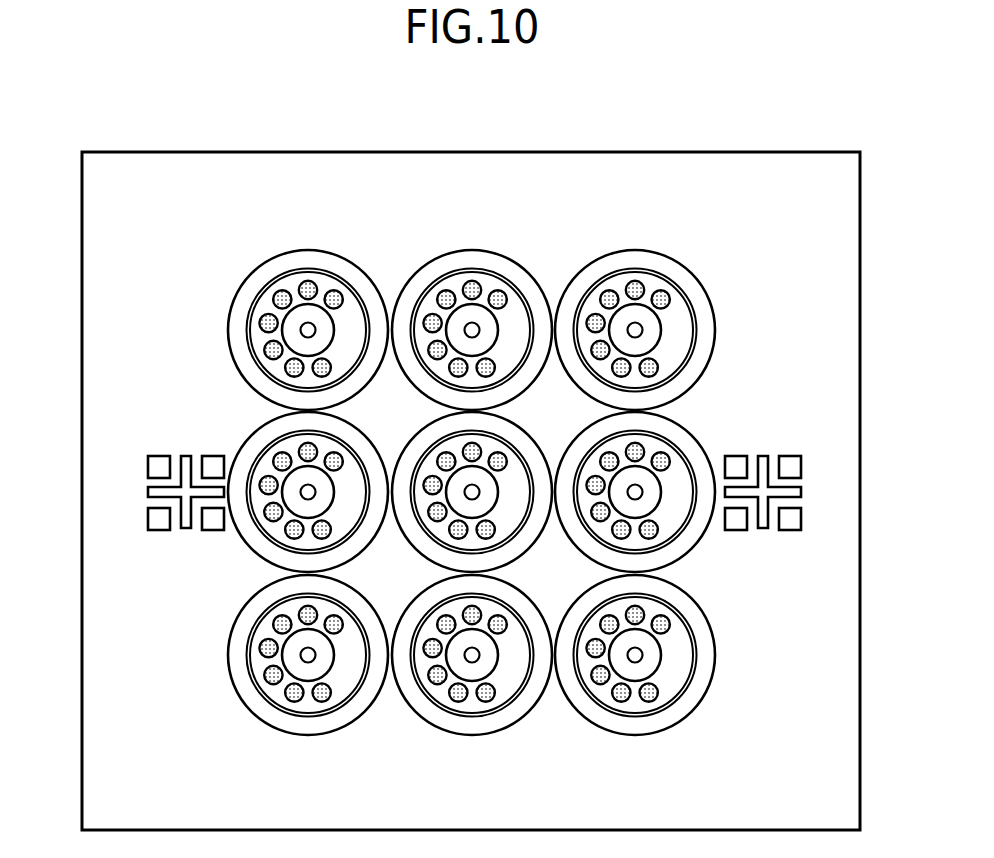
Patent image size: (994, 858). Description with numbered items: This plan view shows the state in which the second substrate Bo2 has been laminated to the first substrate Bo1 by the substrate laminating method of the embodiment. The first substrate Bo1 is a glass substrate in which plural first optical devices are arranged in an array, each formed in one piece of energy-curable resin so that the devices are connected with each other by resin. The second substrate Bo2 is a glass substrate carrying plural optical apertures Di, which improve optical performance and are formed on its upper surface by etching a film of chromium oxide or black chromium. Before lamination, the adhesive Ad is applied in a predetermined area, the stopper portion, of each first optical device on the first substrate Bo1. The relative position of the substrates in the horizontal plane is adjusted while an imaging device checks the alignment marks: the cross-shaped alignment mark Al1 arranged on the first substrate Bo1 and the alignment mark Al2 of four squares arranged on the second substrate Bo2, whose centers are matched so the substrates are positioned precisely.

The optical aperture Di is at (281, 252).
The first substrate Bo1 is at (327, 276).
The second substrate Bo2 is at (862, 276).
The adhesive Ad is at (346, 288).
The alignment mark Al1 is at (148, 494).
The alignment mark Al2 is at (148, 466).